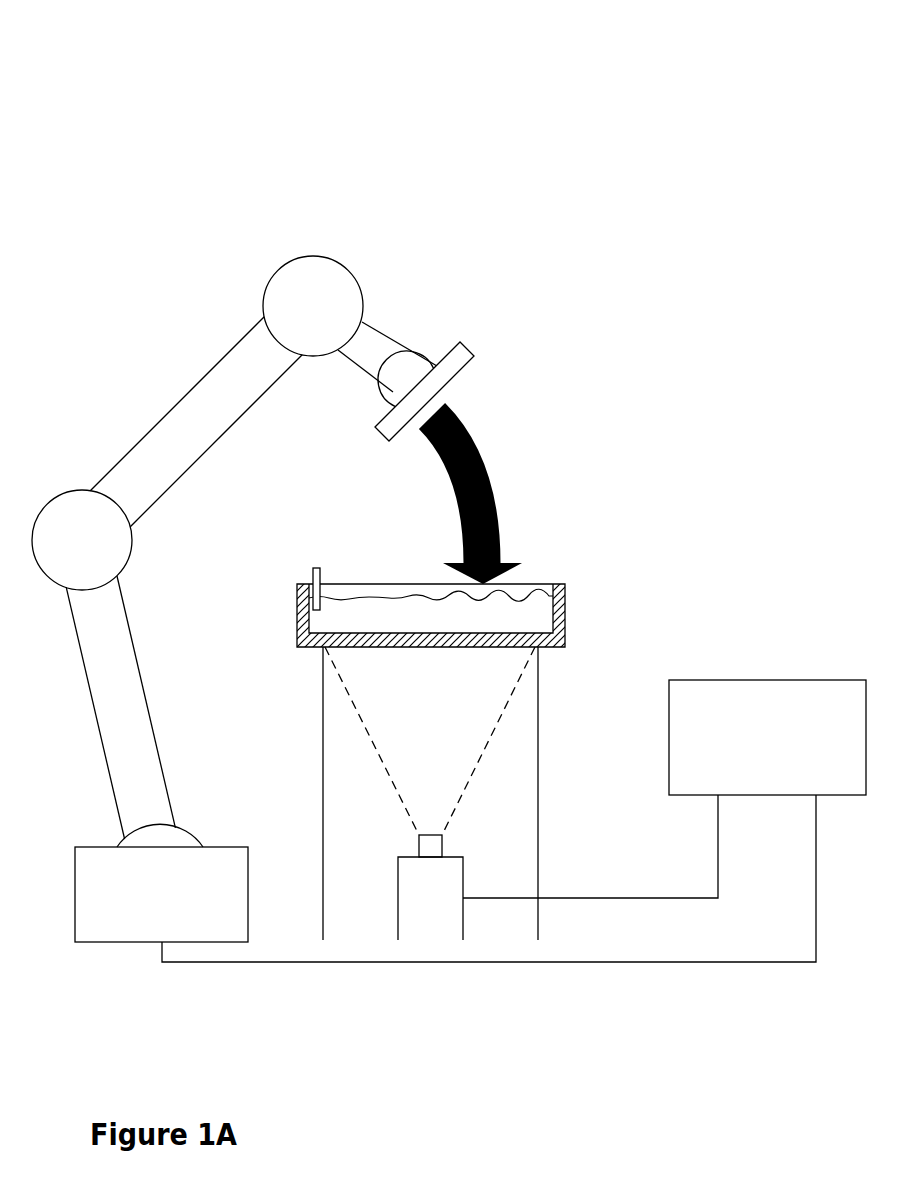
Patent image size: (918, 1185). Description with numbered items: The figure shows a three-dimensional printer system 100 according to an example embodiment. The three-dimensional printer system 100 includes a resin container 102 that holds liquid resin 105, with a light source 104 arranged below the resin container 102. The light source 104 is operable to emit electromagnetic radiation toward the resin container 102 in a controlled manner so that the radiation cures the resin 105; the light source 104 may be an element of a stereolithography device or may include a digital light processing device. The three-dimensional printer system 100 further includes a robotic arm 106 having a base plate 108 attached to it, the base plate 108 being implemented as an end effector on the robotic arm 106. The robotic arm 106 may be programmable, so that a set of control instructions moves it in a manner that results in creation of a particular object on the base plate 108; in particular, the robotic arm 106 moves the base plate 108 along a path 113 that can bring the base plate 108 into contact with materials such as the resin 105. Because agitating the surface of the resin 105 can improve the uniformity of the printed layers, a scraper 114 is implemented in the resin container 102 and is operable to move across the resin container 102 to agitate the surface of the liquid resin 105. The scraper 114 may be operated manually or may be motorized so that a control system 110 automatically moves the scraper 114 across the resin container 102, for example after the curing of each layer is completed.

The three-dimensional printer system 100 is at (433, 142).
The resin container 102 is at (560, 583).
The light source 104 is at (453, 856).
The resin 105 is at (342, 596).
The robotic arm 106 is at (196, 384).
The base plate 108 is at (466, 340).
The control system 110 is at (756, 679).
The path 113 is at (480, 437).
The scraper 114 is at (313, 566).